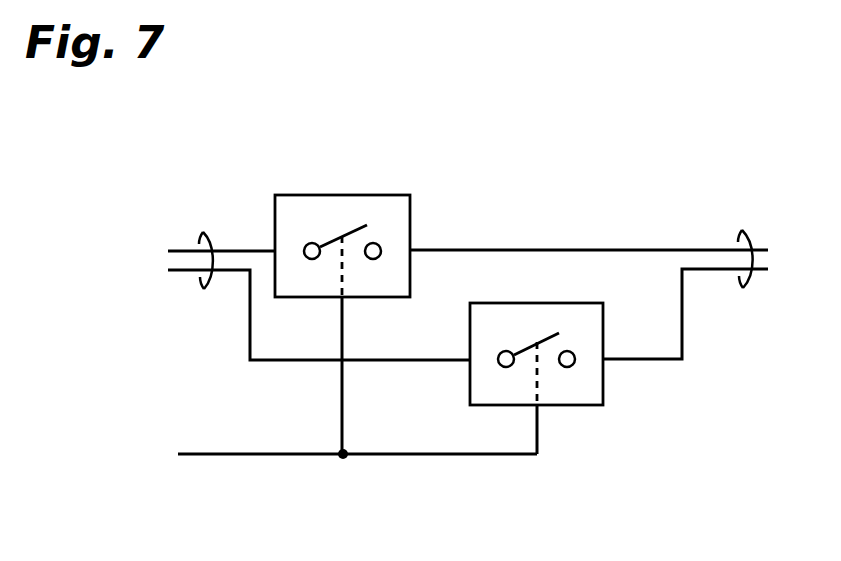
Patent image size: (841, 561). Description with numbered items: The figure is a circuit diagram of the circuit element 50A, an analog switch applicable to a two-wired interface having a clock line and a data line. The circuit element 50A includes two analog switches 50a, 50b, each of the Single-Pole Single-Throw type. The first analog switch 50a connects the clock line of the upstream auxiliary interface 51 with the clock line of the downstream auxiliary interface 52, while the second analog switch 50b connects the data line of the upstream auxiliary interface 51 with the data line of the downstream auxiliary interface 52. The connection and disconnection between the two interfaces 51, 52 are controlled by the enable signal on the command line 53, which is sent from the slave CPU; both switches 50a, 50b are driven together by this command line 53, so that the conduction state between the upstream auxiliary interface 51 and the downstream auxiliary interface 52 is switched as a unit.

The circuit element 50A is at (557, 158).
The analog switch 50a is at (300, 195).
The analog switch 50b is at (603, 397).
The upstream auxiliary interface 51 is at (201, 232).
The downstream auxiliary interface 52 is at (742, 230).
The command line 53 is at (393, 458).